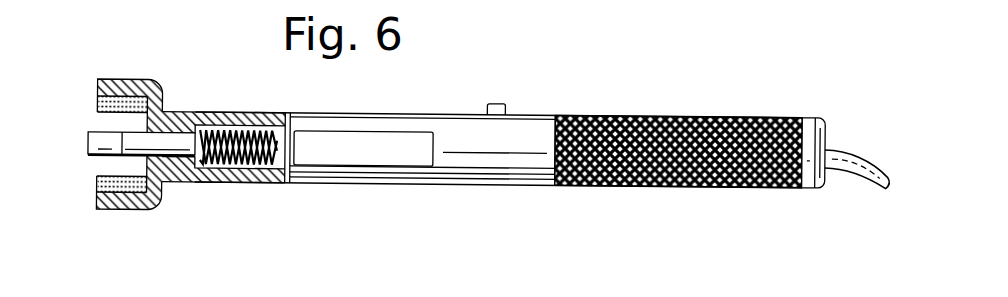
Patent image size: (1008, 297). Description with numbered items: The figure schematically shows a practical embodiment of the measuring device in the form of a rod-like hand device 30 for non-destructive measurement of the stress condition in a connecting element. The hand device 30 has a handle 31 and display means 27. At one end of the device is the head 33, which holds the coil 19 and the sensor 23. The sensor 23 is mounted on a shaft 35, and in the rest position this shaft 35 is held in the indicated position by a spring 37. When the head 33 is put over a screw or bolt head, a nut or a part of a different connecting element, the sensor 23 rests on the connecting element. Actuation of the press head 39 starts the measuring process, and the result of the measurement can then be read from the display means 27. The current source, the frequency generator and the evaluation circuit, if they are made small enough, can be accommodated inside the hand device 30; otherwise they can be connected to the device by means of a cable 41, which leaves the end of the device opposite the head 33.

The coil 19 is at (110, 80).
The head 33 is at (138, 87).
The shaft 35 is at (179, 142).
The sensor 23 is at (92, 145).
The spring 37 is at (240, 167).
The display means 27 is at (410, 157).
The press head 39 is at (503, 103).
The handle 31 is at (672, 190).
The hand device 30 is at (827, 138).
The cable 41 is at (860, 175).